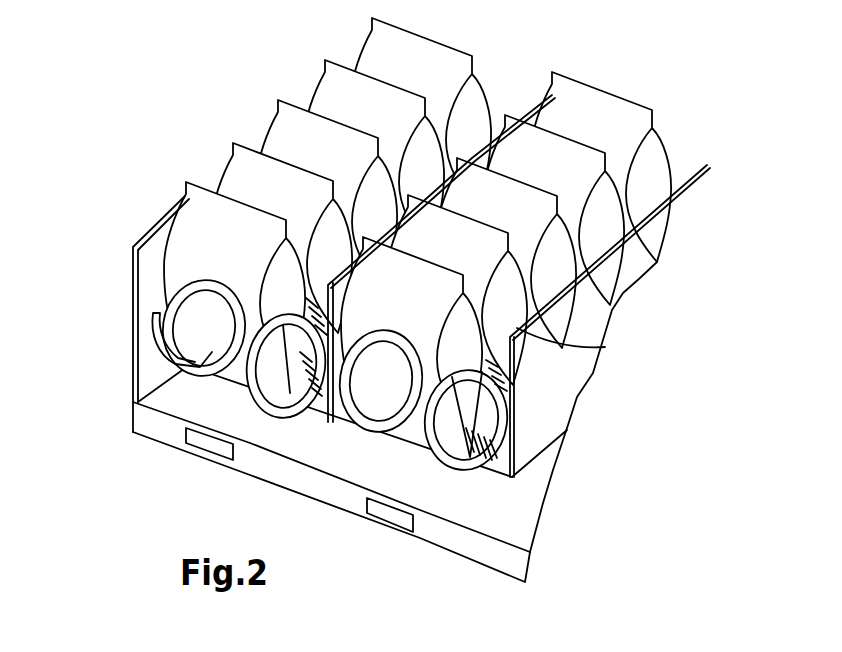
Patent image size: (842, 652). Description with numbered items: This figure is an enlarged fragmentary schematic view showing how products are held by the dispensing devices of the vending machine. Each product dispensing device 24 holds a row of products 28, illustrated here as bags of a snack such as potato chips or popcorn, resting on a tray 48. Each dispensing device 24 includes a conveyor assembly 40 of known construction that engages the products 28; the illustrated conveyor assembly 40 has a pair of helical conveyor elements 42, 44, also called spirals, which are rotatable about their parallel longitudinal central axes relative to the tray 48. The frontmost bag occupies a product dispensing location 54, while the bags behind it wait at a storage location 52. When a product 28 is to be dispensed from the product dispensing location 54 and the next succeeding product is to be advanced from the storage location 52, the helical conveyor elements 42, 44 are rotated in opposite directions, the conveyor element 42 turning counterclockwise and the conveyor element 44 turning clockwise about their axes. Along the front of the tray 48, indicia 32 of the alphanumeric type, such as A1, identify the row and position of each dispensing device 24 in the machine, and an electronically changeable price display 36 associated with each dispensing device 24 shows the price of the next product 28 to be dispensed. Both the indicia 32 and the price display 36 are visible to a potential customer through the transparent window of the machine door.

The product dispensing device 24 is at (230, 381).
The product 28 is at (278, 112).
The indicia 32 is at (252, 470).
The electronically changeable price display 36 is at (197, 440).
The conveyor assembly 40 is at (146, 296).
The helical conveyor element 42 is at (205, 282).
The helical conveyor element 44 is at (283, 322).
The tray 48 is at (120, 351).
The storage location 52 is at (290, 177).
The product dispensing location 54 is at (186, 182).